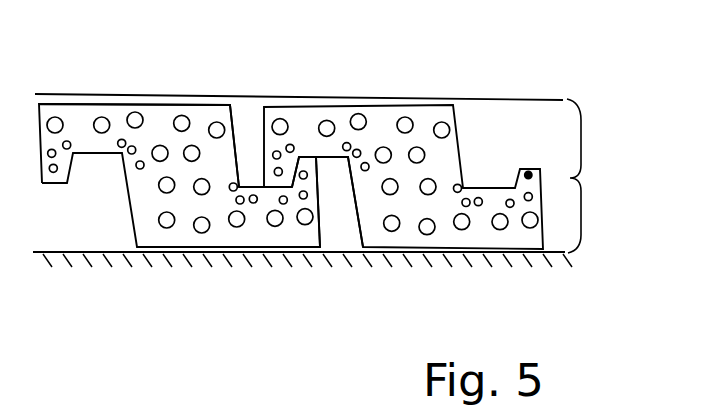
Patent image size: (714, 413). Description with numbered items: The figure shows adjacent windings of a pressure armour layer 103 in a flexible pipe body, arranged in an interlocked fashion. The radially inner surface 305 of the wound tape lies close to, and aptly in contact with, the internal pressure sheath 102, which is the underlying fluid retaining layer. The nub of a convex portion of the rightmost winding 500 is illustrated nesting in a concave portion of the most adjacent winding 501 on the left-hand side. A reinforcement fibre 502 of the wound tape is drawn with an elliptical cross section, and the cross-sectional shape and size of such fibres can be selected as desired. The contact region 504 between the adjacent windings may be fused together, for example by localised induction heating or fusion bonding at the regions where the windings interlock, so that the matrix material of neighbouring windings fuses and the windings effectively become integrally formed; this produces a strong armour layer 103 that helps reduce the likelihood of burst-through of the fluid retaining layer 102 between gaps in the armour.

The rightmost winding 500 is at (382, 123).
The porous region 501 is at (155, 123).
The contact region 504 is at (305, 157).
The reinforcement fibre 502 is at (528, 172).
The pressure armour layer 103 is at (594, 176).
The internal pressure sheath 102 is at (299, 275).
The radially inner surface 305 is at (393, 253).